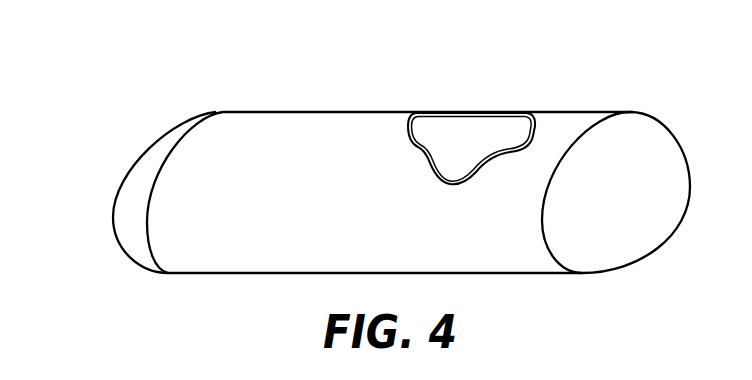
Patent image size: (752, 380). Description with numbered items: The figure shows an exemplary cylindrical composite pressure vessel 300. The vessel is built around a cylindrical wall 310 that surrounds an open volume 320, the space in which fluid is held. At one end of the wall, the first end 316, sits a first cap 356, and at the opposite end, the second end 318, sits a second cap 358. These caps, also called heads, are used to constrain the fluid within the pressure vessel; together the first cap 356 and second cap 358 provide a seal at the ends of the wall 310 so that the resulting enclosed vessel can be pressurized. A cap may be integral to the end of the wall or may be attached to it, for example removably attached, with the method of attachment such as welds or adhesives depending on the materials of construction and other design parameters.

The cylindrical pressure vessel 300 is at (294, 78).
The cylindrical wall 310 is at (340, 130).
The first end 316 is at (180, 136).
The second end 318 is at (600, 122).
The open volume 320 is at (470, 130).
The first cap 356 is at (128, 185).
The second cap 358 is at (667, 157).